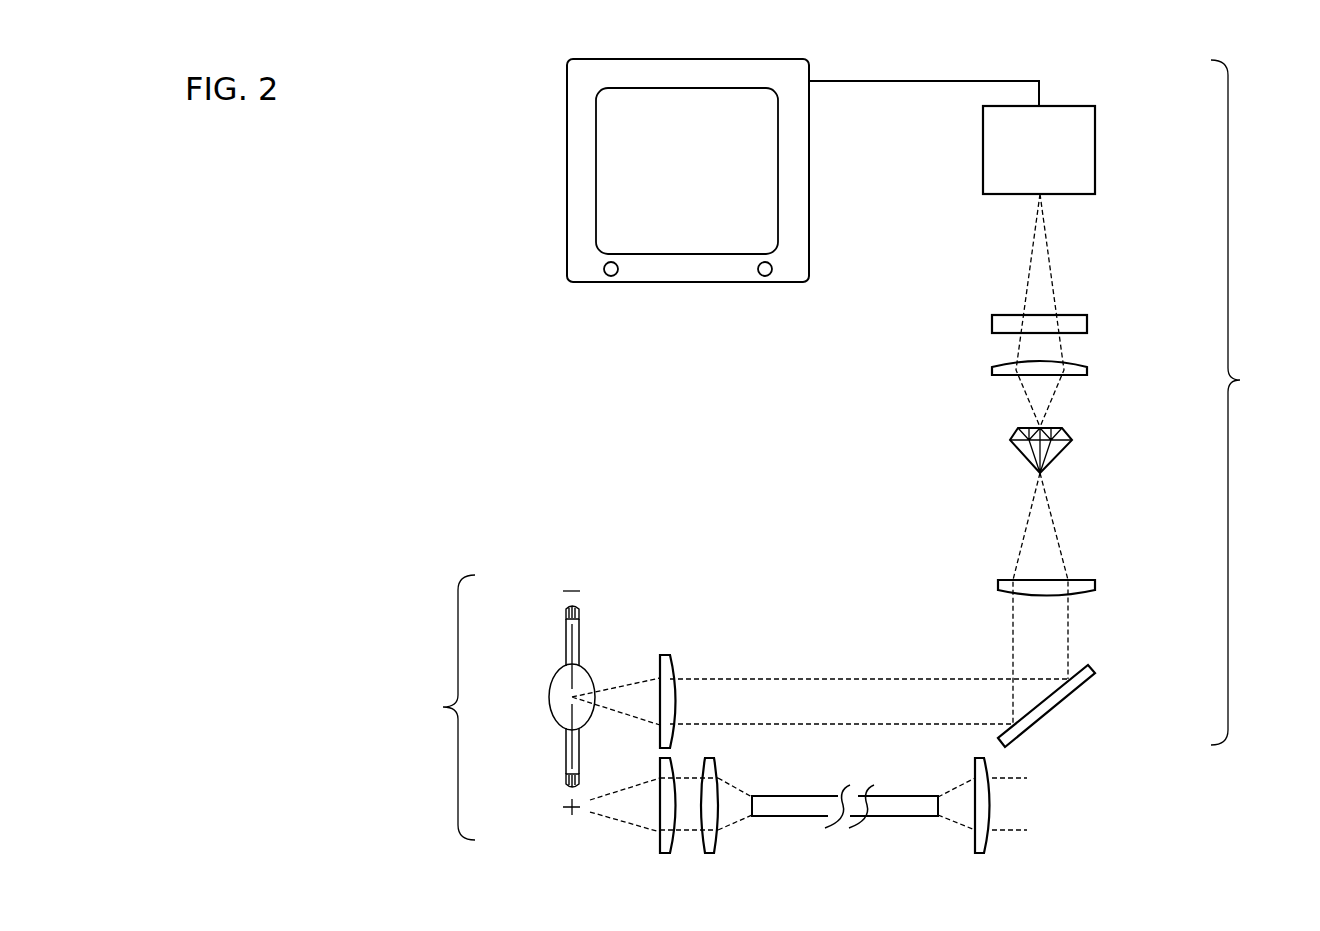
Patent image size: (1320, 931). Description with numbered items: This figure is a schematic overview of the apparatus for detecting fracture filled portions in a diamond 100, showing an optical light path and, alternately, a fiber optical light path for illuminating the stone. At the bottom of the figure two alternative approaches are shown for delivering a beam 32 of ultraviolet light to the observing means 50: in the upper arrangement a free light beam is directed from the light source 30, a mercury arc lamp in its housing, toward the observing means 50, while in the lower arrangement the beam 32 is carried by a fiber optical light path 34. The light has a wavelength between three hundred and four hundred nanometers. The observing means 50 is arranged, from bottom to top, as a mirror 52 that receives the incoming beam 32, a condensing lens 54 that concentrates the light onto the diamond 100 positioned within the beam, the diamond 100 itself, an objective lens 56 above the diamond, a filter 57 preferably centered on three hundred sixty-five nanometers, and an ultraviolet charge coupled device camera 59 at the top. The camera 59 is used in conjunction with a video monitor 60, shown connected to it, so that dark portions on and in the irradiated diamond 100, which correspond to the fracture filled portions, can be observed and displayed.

The mercury arc lamp in housing 30 is at (657, 544).
The beam 32 is at (897, 675).
The fiber optical light path 34 is at (812, 817).
The observing means 50 is at (1249, 402).
The mirror 52 is at (1091, 668).
The condensing lens 54 is at (1095, 580).
The objective lens 56 is at (1087, 367).
The filter 57 is at (1087, 318).
The ultra violet charge coupled device (CCD) type camera 59 is at (1080, 106).
The video monitor 60 is at (563, 176).
The diamond 100 is at (1065, 432).